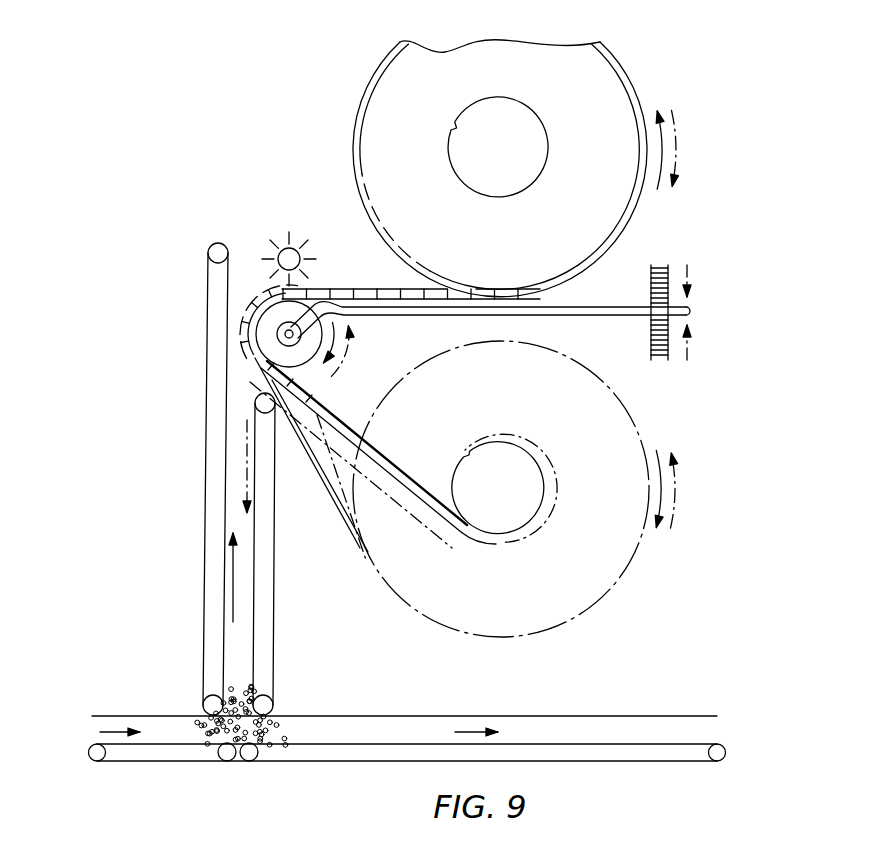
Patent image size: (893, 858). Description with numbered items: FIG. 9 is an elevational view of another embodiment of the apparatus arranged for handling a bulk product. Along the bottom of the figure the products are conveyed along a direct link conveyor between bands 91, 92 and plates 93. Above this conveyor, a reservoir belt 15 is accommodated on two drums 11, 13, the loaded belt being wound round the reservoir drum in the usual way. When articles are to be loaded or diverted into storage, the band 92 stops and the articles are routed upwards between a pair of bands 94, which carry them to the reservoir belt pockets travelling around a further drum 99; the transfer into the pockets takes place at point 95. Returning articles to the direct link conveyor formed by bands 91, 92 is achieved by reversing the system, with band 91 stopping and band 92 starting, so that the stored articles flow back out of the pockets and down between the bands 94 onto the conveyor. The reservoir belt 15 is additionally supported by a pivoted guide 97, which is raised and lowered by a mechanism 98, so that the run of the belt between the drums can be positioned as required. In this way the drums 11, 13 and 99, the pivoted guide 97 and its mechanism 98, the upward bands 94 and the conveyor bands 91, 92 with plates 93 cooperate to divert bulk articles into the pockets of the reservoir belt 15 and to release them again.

The drum 11 is at (520, 477).
The drum 13 is at (537, 137).
The reservoir belt 15 is at (322, 405).
The band 91 is at (188, 748).
The band 92 is at (310, 748).
The plates 93 is at (132, 718).
The bands 94 is at (214, 538).
The point 95 is at (242, 316).
The pivoted guide 97 is at (375, 315).
The mechanism 98 is at (650, 318).
The drum 99 is at (257, 343).